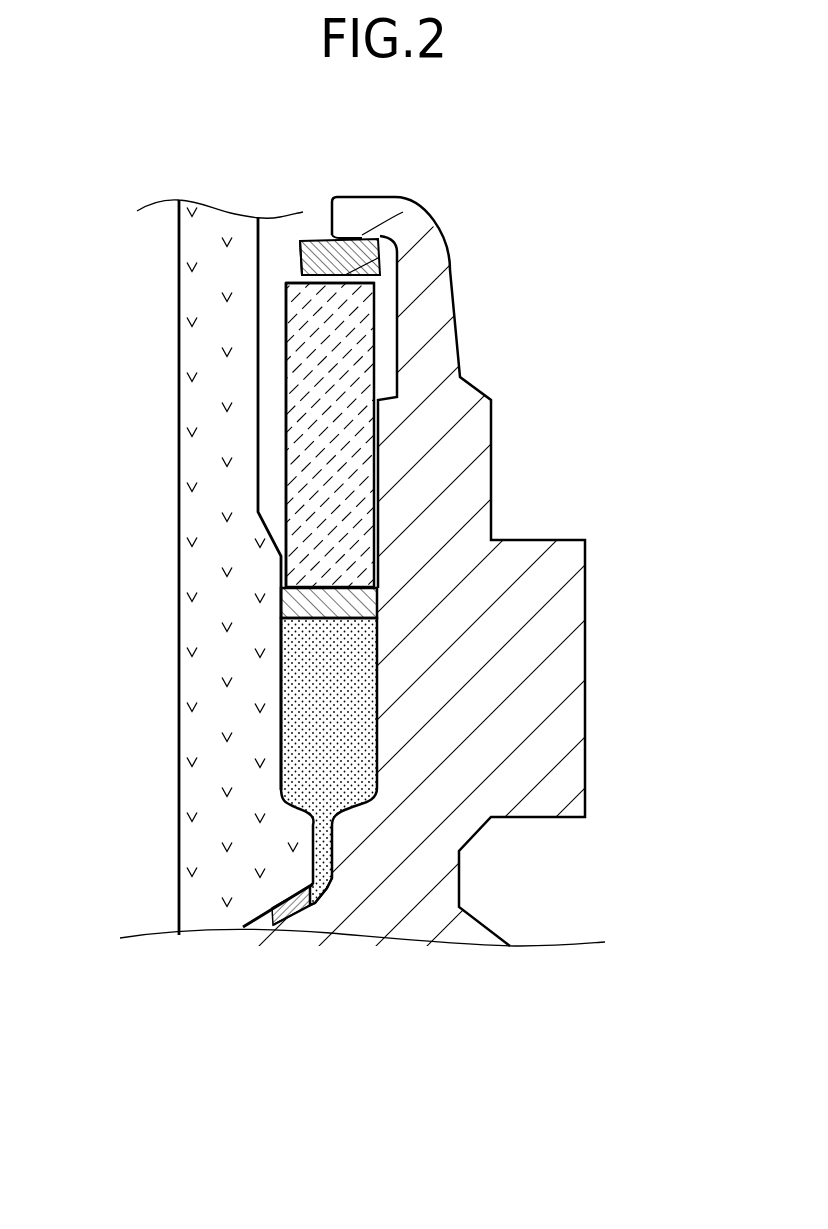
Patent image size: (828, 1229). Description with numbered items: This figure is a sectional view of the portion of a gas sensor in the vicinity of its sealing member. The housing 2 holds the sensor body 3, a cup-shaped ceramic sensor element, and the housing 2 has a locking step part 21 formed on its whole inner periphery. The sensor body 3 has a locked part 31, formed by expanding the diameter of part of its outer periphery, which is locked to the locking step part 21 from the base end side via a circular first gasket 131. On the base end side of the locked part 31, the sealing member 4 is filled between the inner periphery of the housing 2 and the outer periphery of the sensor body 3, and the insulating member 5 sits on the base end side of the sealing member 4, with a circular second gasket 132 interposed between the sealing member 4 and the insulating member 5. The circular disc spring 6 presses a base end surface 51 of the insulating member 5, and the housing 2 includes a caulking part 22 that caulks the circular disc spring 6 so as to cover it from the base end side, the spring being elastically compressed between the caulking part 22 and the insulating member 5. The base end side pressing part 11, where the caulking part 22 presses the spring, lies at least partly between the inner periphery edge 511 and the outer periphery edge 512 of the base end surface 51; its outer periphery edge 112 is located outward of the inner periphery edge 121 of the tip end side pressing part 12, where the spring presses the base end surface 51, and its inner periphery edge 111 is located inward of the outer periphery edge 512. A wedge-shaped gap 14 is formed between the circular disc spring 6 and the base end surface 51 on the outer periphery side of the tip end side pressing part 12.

The housing 2 is at (496, 643).
The sensor body 3 is at (200, 472).
The sealing member 4 is at (295, 707).
The insulating member 5 is at (341, 445).
The circular disc spring 6 is at (300, 240).
The base end side pressing part 11 is at (398, 209).
The tip end side pressing part 12 is at (312, 297).
The wedge-shaped gap 14 is at (382, 272).
The locking step part 21 is at (307, 913).
The caulking part 22 is at (340, 218).
The locked part 31 is at (284, 887).
The base end surface 51 is at (317, 311).
The inner periphery edge 111 is at (340, 230).
The outer periphery edge 112 is at (382, 236).
The inner periphery edge 121 is at (288, 284).
The first gasket 131 is at (290, 920).
The second gasket 132 is at (300, 604).
The inner periphery edge 511 is at (300, 281).
The outer periphery edge 512 is at (381, 283).